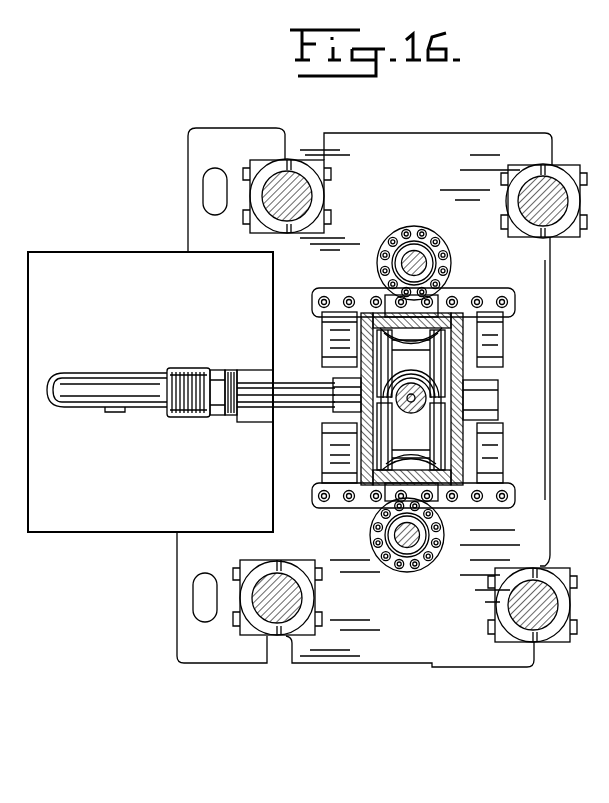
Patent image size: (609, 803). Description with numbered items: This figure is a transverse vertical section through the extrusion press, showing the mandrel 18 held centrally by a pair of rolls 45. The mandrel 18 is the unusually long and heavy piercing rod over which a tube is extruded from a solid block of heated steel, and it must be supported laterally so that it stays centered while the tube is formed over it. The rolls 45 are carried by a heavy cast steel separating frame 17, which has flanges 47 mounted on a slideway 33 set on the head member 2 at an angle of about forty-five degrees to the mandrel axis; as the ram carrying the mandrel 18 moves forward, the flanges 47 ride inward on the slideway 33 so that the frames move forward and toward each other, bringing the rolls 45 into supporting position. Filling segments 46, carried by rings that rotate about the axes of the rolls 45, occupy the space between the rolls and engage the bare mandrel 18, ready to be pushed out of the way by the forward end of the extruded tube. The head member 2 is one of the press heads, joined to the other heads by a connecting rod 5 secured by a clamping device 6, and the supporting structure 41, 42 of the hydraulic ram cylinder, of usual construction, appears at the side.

The head member 2 is at (466, 148).
The connecting rod 5 is at (303, 197).
The clamping device 6 is at (296, 163).
The separating frame 17 is at (443, 317).
The mandrel 18 is at (393, 415).
The slideway 33 is at (333, 375).
The supporting structure 41 is at (252, 412).
The supporting structure 42 is at (258, 392).
The roll 45 is at (457, 308).
The filling segment 46 is at (407, 373).
The flange 47 is at (340, 387).